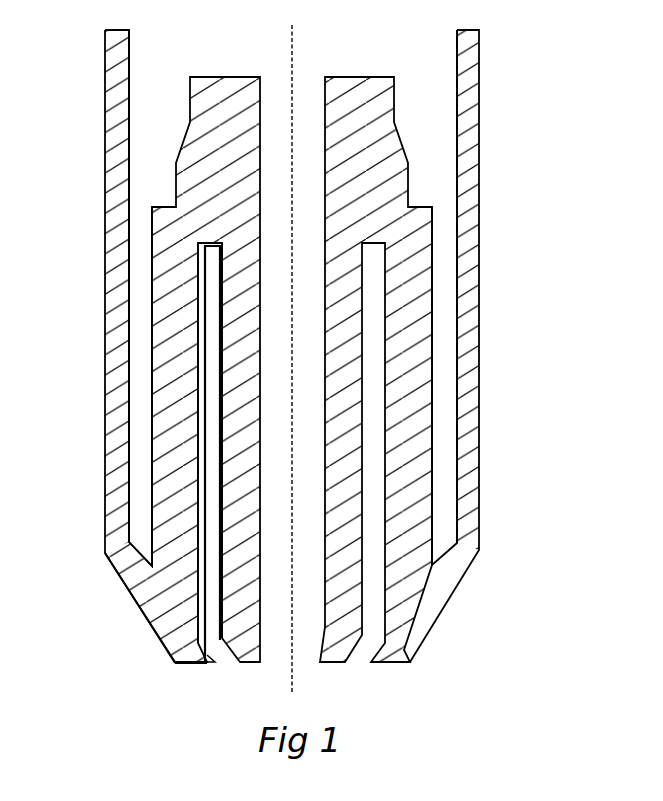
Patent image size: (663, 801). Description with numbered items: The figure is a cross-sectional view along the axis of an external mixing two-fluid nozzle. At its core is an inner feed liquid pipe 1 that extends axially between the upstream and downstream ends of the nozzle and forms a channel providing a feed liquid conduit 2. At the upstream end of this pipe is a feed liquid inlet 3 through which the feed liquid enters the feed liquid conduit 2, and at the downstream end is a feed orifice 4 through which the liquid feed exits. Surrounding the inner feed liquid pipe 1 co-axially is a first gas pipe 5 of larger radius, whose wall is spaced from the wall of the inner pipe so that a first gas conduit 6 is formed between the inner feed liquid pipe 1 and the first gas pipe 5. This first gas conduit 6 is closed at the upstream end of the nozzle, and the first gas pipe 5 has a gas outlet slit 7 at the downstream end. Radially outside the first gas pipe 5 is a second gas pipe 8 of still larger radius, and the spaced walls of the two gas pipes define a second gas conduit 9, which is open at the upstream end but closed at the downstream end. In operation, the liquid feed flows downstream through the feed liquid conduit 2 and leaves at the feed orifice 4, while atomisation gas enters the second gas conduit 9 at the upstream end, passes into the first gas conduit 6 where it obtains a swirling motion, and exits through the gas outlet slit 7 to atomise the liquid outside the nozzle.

The inner feed liquid pipe 1 is at (338, 570).
The feed liquid conduit 2 is at (298, 430).
The feed liquid inlet 3 is at (322, 65).
The feed orifice 4 is at (320, 662).
The first gas pipe 5 is at (180, 492).
The first gas conduit 6 is at (212, 405).
The gas outlet slit 7 is at (213, 667).
The second gas pipe 8 is at (467, 320).
The second gas conduit 9 is at (438, 272).